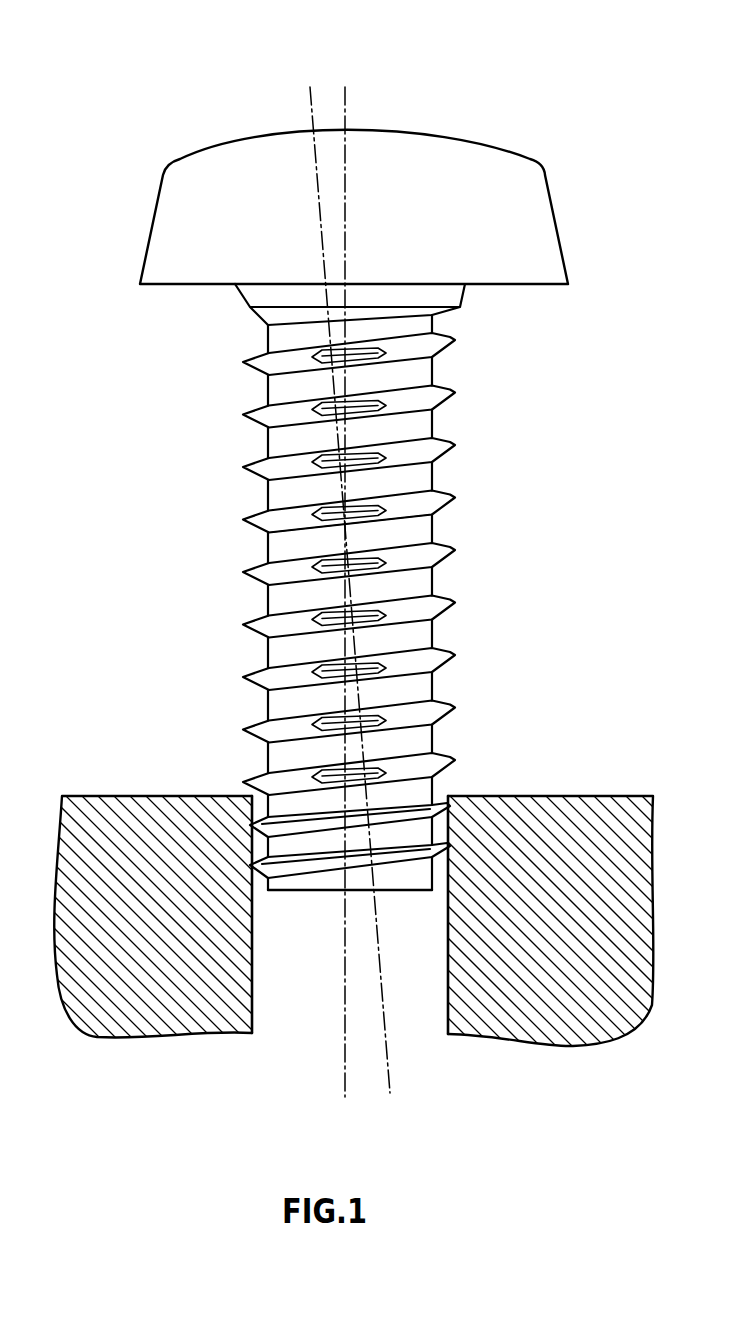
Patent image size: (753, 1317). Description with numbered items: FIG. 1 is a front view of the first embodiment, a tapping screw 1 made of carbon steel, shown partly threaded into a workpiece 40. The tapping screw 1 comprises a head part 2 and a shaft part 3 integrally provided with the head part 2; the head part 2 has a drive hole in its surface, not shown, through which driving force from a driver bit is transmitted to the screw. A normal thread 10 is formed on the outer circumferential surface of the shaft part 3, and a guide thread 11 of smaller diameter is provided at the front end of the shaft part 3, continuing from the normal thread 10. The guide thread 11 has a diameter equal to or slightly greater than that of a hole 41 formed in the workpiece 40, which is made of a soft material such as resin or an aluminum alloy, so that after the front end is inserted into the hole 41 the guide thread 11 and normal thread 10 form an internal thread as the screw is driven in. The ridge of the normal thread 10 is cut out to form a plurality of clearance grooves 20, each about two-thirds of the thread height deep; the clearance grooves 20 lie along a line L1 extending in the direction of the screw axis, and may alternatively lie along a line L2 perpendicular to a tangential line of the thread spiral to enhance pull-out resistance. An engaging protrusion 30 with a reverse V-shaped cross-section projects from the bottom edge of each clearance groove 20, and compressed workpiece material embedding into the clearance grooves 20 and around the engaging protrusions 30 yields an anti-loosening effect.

The tapping screw 1 is at (600, 82).
The head part 2 is at (547, 217).
The shaft part 3 is at (282, 335).
The normal thread 10 is at (527, 761).
The guide thread 11 is at (452, 802).
The clearance groove 20 is at (317, 530).
The engaging protrusion 30 is at (313, 507).
The workpiece 40 is at (578, 1048).
The hole 41 is at (266, 1025).
The line L1 is at (345, 610).
The line L2 is at (357, 606).